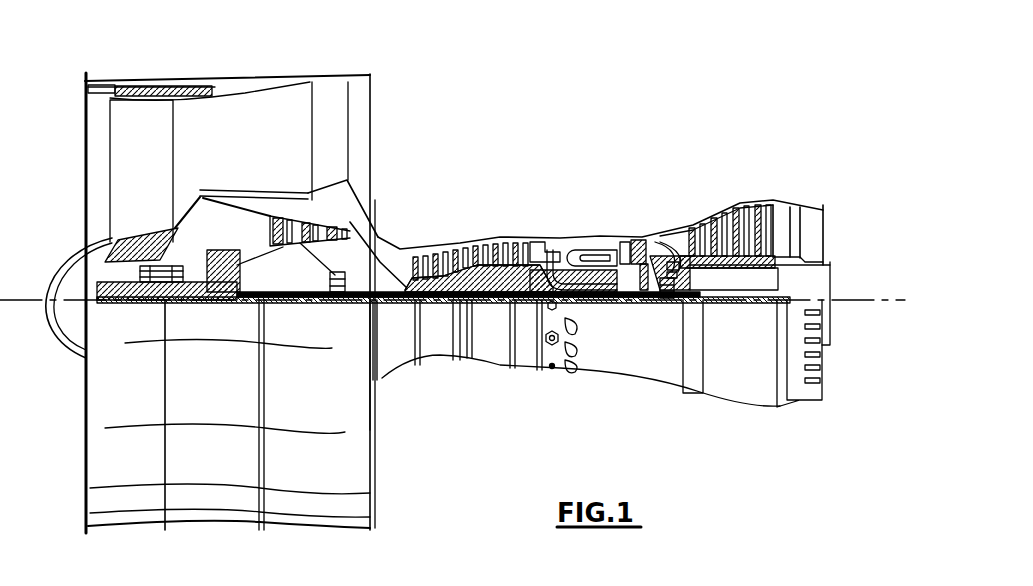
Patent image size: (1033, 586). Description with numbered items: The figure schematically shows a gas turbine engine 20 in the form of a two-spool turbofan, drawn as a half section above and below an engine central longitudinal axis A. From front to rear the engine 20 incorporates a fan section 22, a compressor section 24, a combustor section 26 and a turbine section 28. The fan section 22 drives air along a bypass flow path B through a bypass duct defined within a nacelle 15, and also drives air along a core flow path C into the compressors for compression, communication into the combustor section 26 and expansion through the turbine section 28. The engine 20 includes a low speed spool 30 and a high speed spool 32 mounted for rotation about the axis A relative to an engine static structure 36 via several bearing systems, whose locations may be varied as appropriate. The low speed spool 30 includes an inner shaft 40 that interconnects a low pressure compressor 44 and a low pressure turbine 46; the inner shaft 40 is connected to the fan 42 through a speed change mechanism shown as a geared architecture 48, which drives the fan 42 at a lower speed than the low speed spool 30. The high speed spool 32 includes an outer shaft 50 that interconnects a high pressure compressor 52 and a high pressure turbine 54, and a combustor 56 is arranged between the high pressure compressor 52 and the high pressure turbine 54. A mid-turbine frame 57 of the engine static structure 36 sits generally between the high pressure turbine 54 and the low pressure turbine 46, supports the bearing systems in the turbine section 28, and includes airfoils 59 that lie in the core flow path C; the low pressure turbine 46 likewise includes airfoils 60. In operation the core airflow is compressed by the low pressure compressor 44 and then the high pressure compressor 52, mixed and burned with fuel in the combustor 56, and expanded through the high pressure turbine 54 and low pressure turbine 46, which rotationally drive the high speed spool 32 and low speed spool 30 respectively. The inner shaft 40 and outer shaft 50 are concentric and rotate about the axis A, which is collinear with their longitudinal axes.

The gas turbine engine 20 is at (592, 112).
The fan section 22 is at (171, 68).
The nacelle 15 is at (228, 84).
The fan 42 is at (158, 182).
The compressor section 24 is at (413, 221).
The low pressure compressor 44 is at (365, 182).
The combustor section 26 is at (584, 210).
The turbine section 28 is at (715, 171).
The low speed spool 30 is at (493, 315).
The high speed spool 32 is at (526, 248).
The engine static structure 36 is at (526, 375).
The inner shaft 40 is at (393, 355).
The low pressure turbine 46 is at (732, 214).
The geared architecture 48 is at (231, 290).
The outer shaft 50 is at (588, 302).
The high pressure compressor 52 is at (466, 250).
The high pressure turbine 54 is at (637, 240).
The combustor 56 is at (580, 250).
The mid-turbine frame 57 is at (674, 222).
The airfoils 59 is at (688, 272).
The airfoils 60 is at (700, 225).
The engine central longitudinal axis A is at (893, 300).
The bypass flow path B is at (195, 138).
The core flow path C is at (228, 221).